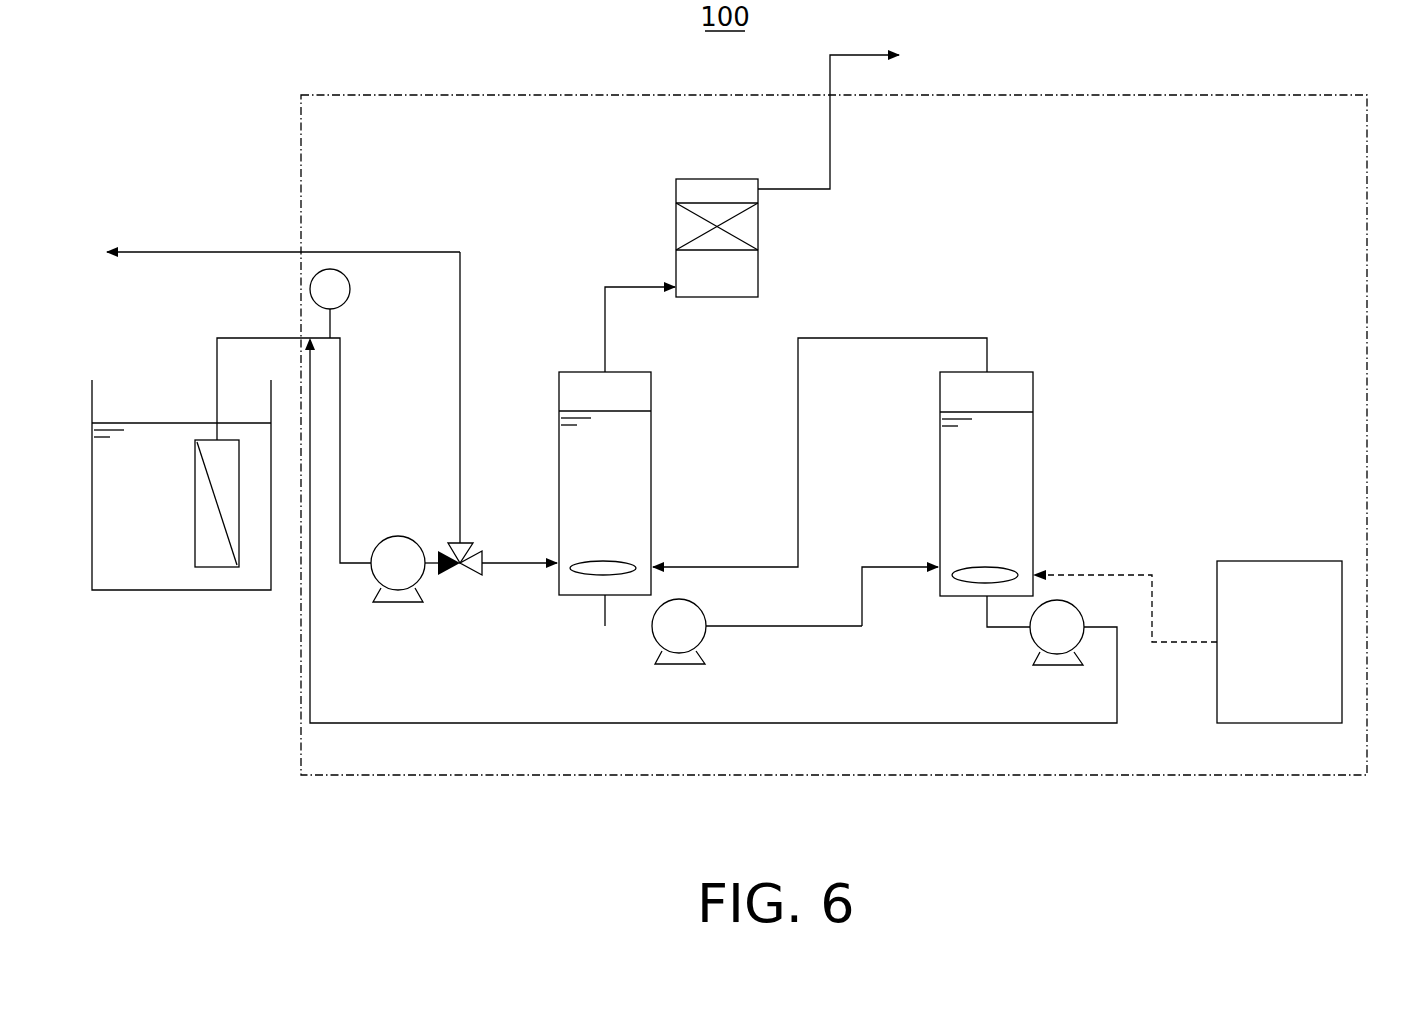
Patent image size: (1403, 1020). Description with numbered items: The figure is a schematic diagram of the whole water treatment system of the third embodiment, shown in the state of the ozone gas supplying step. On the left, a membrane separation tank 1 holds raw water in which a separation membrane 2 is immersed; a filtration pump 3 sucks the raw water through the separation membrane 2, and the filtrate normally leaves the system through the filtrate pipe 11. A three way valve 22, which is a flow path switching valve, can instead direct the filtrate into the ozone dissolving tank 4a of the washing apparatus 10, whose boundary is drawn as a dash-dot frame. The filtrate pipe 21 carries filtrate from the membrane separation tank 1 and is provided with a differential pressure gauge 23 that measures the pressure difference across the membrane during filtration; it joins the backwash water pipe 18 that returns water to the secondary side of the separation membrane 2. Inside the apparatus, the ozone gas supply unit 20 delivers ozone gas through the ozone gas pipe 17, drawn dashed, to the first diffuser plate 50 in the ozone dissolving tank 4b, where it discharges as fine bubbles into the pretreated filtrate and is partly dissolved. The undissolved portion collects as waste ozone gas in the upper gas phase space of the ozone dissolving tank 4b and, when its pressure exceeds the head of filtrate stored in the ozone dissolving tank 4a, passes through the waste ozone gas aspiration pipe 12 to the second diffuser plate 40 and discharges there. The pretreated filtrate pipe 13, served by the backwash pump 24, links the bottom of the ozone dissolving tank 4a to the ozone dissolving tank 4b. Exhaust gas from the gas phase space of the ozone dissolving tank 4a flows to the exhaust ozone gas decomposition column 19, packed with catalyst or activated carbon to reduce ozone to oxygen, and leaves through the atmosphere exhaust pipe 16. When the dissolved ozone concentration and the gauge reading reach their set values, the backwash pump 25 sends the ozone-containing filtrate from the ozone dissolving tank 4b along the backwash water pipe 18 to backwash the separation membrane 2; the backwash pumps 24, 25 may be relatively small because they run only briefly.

The washing apparatus 10 is at (300, 131).
The filtrate pipe 11 is at (292, 250).
The filtrate pipe 21 is at (217, 362).
The backwash water pipe 18 is at (318, 723).
The differential pressure gauge 23 is at (350, 285).
The membrane separation tank 1 is at (104, 592).
The separation membrane 2 is at (217, 568).
The filtration pump 3 is at (406, 537).
The three way valve 22 is at (461, 578).
The ozone dissolving tank 4a is at (568, 372).
The diffuser plate 40 is at (628, 563).
The exhaust ozone gas decomposition column 19 is at (676, 198).
The atmosphere exhaust pipe 16 is at (832, 160).
The waste ozone gas aspiration pipe 12 is at (937, 338).
The ozone dissolving tank 4b is at (1015, 372).
The diffuser plate 50 is at (1000, 570).
The backwash pump 24 is at (652, 641).
The pretreated filtrate pipe 13 is at (845, 627).
The backwash pump 25 is at (1037, 652).
The ozone gas supply unit 20 is at (1279, 561).
The ozone gas pipe 17 is at (1155, 586).